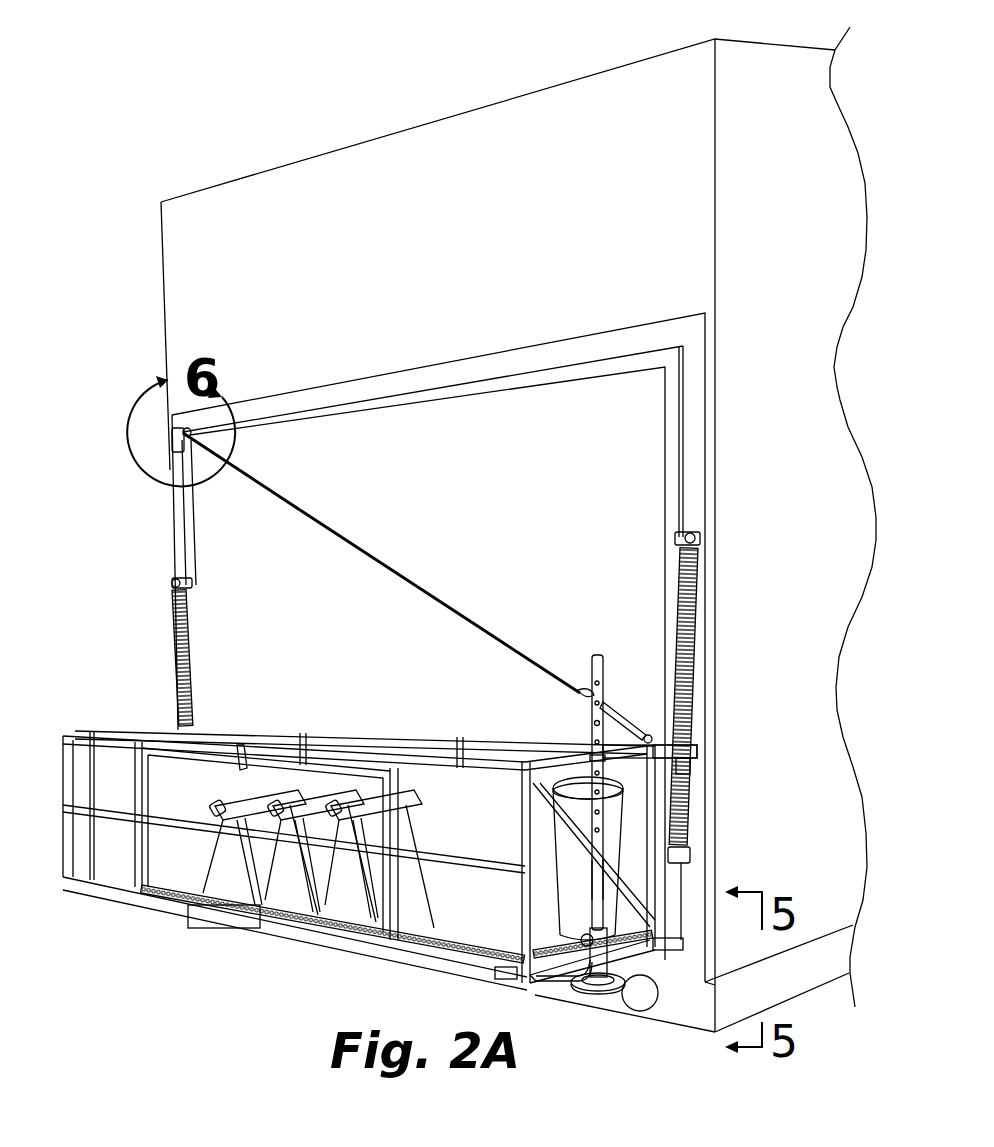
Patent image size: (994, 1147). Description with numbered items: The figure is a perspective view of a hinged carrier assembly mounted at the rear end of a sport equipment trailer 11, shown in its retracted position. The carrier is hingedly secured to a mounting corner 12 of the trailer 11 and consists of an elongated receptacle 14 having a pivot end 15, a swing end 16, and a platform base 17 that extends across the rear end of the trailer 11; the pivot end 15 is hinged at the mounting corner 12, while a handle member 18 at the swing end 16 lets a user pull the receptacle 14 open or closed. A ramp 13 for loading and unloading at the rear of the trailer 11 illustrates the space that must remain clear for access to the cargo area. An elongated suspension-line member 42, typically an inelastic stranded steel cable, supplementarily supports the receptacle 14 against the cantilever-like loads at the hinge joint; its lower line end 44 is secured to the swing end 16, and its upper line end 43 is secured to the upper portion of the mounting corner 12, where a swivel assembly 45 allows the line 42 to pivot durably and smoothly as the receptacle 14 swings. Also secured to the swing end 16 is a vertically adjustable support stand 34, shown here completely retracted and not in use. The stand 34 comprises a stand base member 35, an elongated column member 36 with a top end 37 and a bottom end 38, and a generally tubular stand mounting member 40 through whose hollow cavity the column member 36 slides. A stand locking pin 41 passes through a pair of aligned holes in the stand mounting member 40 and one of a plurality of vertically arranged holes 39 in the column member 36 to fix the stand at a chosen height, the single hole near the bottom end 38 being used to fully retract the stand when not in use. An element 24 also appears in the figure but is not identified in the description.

The sport equipment trailer 11 is at (490, 92).
The mounting corner 12 is at (161, 268).
The ramp 13 is at (212, 616).
The elongated receptacle 14 is at (136, 914).
The pivot end 15 is at (120, 732).
The swing end 16 is at (553, 757).
The platform base 17 is at (292, 912).
The handle member 18 is at (562, 985).
The hanger pole 24 is at (181, 522).
The vertically adjustable support stand 34 is at (625, 776).
The stand base member 35 is at (605, 995).
The elongated column member 36 is at (600, 822).
The top end 37 is at (597, 652).
The bottom end 38 is at (595, 873).
The vertically arranged holes 39 is at (590, 722).
The stand mounting member 40 is at (590, 930).
The stand locking pin 41 is at (585, 937).
The elongated suspension-line member 42 is at (421, 590).
The upper line end 43 is at (255, 477).
The lower line end 44 is at (625, 717).
The swivel assembly 45 is at (156, 434).